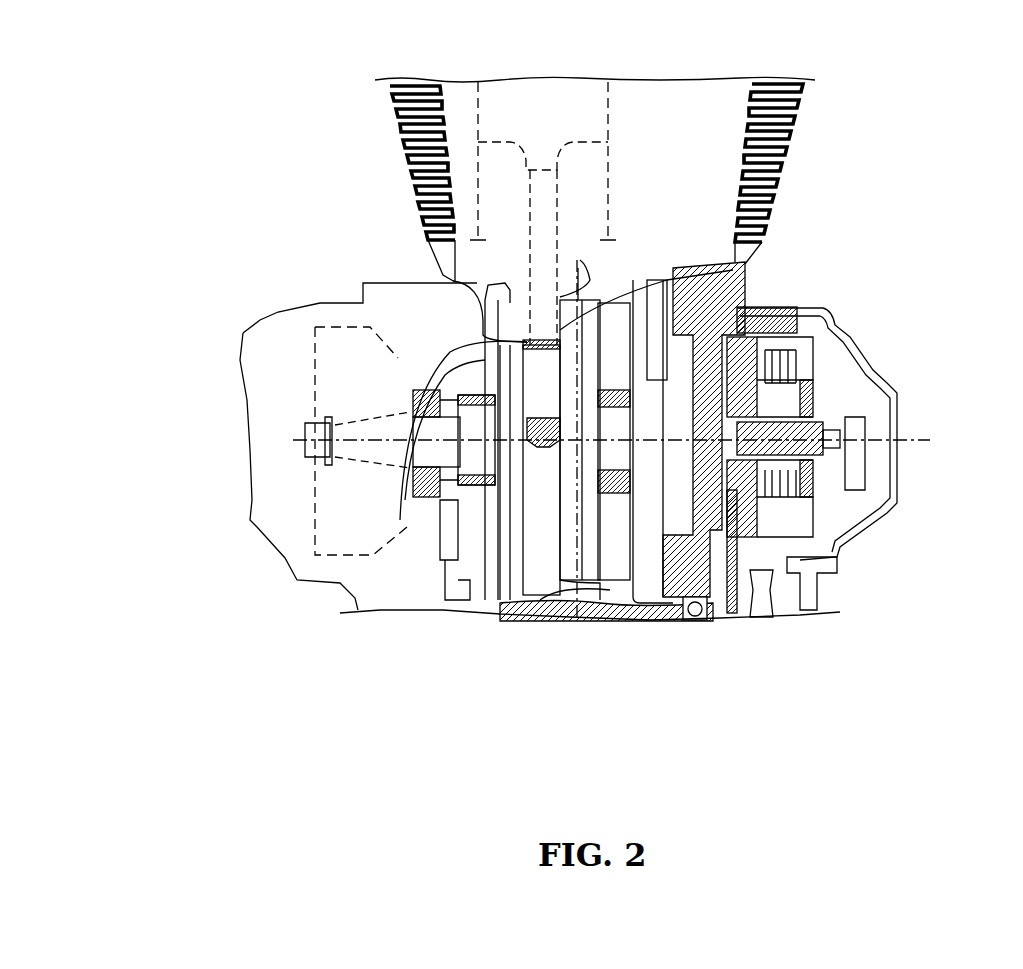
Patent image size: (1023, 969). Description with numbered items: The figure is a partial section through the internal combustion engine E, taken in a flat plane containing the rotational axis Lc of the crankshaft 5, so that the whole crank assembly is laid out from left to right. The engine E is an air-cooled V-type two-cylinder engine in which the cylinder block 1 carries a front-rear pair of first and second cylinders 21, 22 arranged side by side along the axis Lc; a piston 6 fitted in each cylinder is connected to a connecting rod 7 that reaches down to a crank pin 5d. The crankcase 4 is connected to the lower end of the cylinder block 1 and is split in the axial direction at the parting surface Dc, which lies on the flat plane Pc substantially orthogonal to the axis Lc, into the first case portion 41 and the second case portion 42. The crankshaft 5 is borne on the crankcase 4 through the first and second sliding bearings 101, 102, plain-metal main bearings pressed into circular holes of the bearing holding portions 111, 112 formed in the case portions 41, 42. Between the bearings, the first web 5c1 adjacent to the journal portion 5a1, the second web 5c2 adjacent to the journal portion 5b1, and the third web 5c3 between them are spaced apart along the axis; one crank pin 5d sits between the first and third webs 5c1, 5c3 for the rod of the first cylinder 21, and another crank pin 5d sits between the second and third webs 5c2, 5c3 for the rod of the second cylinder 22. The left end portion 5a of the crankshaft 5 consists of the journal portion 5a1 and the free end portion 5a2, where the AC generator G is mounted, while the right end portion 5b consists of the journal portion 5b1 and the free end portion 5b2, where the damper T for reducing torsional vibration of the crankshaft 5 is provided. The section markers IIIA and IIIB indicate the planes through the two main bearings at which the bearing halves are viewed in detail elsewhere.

The cylinder block 1 is at (743, 252).
The first cylinder 21 is at (457, 180).
The second cylinder 22 is at (733, 122).
The crankcase 4 is at (668, 698).
The first case portion 41 is at (572, 617).
The second case portion 42 is at (613, 617).
The crankshaft 5 is at (545, 500).
The left end portion 5a is at (395, 698).
The journal portion 5a1 is at (412, 470).
The free end portion 5a2 is at (397, 470).
The right end portion 5b is at (920, 698).
The journal portion 5b1 is at (747, 537).
The free end portion 5b2 is at (840, 557).
The first web 5c1 is at (512, 580).
The second web 5c2 is at (727, 620).
The third web 5c3 is at (572, 565).
The crank pin 5d is at (540, 390).
The piston 6 is at (568, 122).
The connecting rod 7 is at (543, 200).
The first sliding bearing 101 is at (440, 378).
The second sliding bearing 102 is at (812, 410).
The bearing holding portion 111 is at (455, 283).
The bearing holding portion 112 is at (760, 292).
The internal combustion engine E is at (928, 180).
The AC generator G is at (333, 368).
The damper T is at (800, 372).
The flat plane Pc is at (590, 285).
The rotational axis Lc is at (930, 442).
The parting surface Dc is at (650, 622).
The section line IIIA is at (485, 392).
The section line IIIB is at (630, 528).